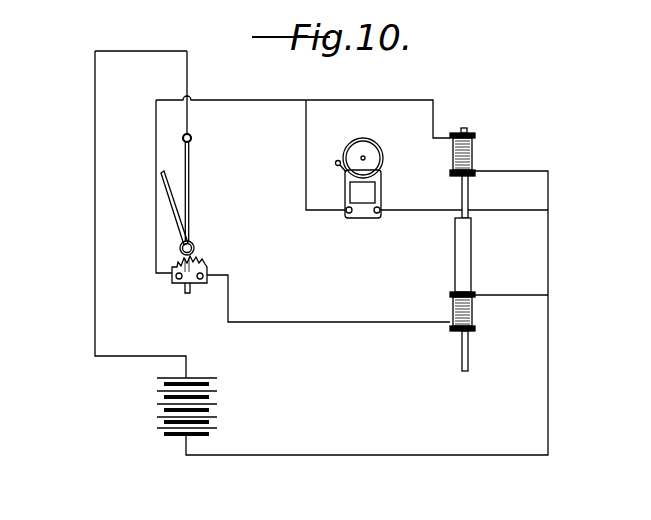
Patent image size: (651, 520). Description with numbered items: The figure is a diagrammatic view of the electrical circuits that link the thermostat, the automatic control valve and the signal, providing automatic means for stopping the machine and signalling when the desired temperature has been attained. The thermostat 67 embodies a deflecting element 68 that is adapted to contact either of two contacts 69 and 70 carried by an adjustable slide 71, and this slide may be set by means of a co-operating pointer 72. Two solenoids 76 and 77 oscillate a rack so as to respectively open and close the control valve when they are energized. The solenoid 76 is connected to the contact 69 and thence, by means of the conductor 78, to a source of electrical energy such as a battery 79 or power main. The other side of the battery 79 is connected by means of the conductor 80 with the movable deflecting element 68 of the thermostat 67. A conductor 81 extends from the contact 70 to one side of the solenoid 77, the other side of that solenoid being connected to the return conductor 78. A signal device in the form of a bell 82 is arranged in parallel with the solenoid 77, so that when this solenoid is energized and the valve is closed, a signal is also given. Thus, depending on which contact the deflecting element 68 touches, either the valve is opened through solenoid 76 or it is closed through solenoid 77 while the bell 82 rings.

The thermostat 67 is at (204, 239).
The deflecting element 68 is at (196, 184).
The contact 69 is at (191, 286).
The contact 70 is at (177, 286).
The adjustable slide 71 is at (215, 265).
The pointer 72 is at (172, 177).
The solenoid 76 is at (478, 315).
The solenoid 77 is at (476, 146).
The conductor 78 is at (349, 452).
The battery 79 is at (222, 425).
The conductor 80 is at (88, 271).
The conductor 81 is at (249, 101).
The bell 82 is at (382, 191).